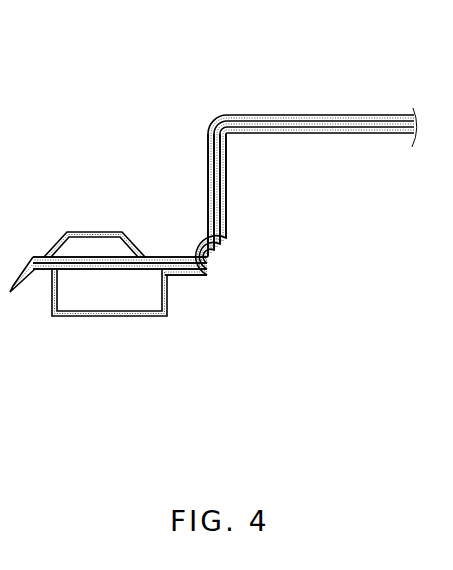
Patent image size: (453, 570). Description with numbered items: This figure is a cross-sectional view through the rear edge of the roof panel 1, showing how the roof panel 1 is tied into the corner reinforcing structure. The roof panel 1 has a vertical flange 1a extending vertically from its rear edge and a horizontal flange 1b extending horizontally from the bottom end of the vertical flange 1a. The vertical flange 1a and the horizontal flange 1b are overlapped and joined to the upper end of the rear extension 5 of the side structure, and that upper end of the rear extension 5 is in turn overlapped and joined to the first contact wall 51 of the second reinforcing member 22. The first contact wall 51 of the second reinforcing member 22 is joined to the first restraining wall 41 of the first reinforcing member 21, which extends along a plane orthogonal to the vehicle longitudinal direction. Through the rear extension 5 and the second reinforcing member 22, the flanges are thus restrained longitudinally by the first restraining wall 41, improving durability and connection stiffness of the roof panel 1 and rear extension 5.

The roof panel 1 is at (225, 158).
The vertical flange 1a is at (206, 187).
The horizontal flange 1b is at (172, 256).
The first contact wall 51 is at (226, 162).
The first restraining wall 41 is at (226, 200).
The rear extension 5 is at (226, 232).
The first reinforcing member 21 is at (106, 304).
The second reinforcing member 22 is at (105, 273).